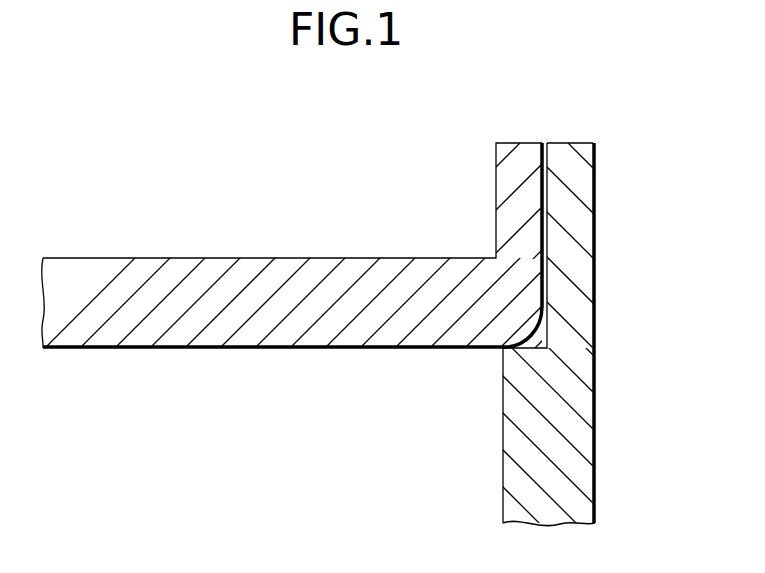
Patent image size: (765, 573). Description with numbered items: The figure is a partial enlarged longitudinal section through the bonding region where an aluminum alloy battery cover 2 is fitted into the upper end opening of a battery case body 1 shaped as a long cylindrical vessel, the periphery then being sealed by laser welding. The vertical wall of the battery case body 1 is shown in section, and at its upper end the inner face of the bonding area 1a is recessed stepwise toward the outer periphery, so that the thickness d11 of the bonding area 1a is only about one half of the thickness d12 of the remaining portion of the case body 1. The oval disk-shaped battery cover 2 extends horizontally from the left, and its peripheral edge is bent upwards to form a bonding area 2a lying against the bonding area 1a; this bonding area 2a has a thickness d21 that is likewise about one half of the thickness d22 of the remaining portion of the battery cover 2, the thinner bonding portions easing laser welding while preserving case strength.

The battery case body 1 is at (610, 385).
The bonding area of the battery case body 1a is at (582, 203).
The battery cover 2 is at (278, 257).
The bonding area of the battery cover 2a is at (497, 188).
The thickness of the bonding area of the battery case body d11 is at (593, 138).
The thickness of the remaining portion of the battery case body d12 is at (468, 460).
The thickness of the bonding area of the battery cover d21 is at (542, 138).
The thickness of the remaining portion of the battery cover d22 is at (177, 382).